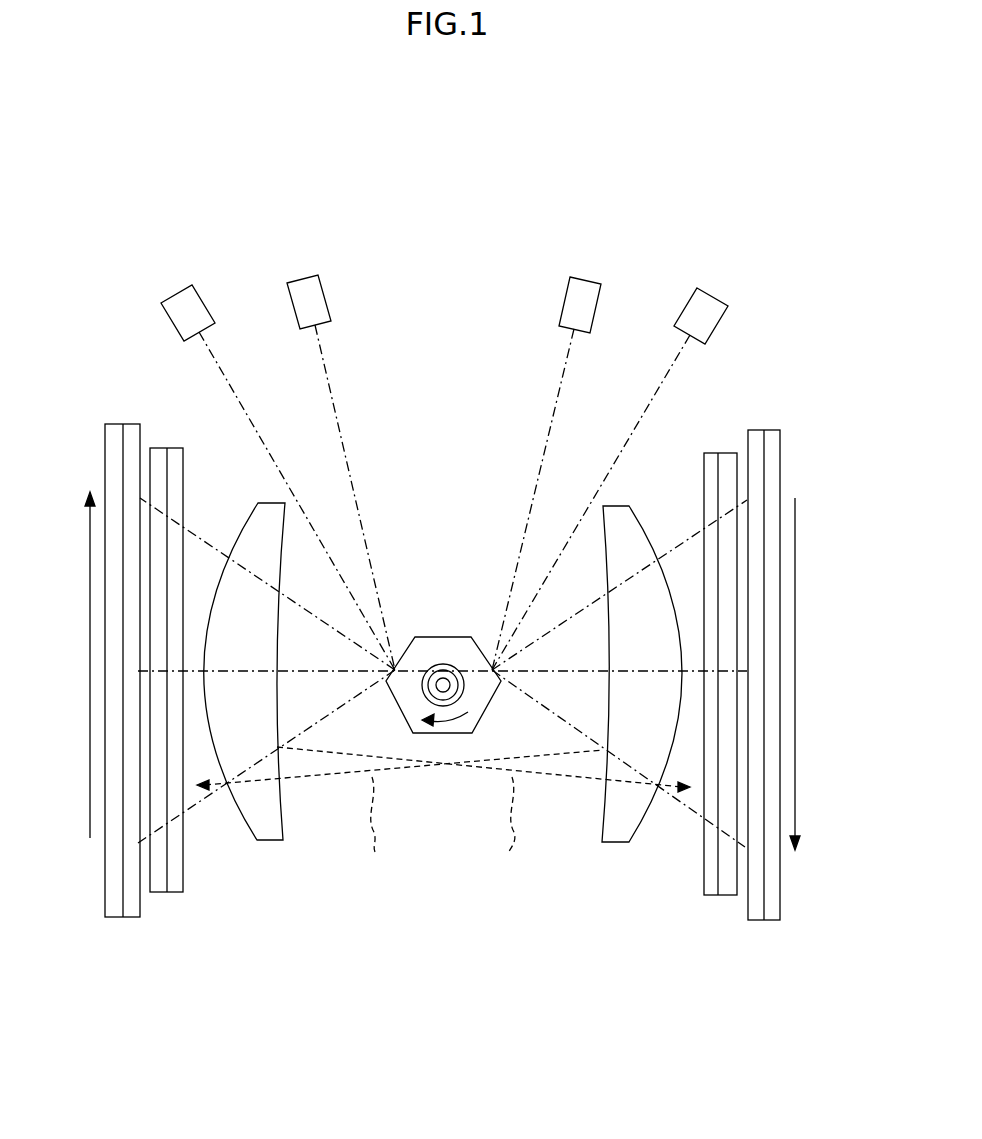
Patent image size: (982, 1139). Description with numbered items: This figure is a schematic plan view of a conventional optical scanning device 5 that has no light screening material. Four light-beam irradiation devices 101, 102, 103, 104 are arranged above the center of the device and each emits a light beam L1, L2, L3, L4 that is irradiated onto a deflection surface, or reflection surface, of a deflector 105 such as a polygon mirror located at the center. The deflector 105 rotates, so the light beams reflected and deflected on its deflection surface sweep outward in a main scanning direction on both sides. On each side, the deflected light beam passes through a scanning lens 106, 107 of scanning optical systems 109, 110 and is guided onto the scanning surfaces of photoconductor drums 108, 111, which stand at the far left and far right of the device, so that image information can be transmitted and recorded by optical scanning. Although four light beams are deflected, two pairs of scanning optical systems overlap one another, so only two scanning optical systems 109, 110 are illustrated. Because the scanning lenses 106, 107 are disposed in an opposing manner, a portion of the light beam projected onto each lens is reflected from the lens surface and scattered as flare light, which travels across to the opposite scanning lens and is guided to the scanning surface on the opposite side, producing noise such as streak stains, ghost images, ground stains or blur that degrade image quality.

The optical scanning device 5 is at (143, 195).
The light-beam irradiation device 101 is at (703, 317).
The light-beam irradiation device 102 is at (572, 295).
The light-beam irradiation device 103 is at (318, 293).
The light-beam irradiation device 104 is at (185, 310).
The deflector 105 is at (443, 650).
The scanning lens 106 is at (617, 832).
The scanning lens 107 is at (268, 827).
The photoconductor drum 108 is at (768, 920).
The scanning optical system 109 is at (723, 890).
The scanning optical system 110 is at (160, 885).
The photoconductor drum 111 is at (117, 908).
The light beam L1 is at (620, 457).
The light beam L2 is at (552, 421).
The light beam L3 is at (340, 420).
The light beam L4 is at (268, 455).